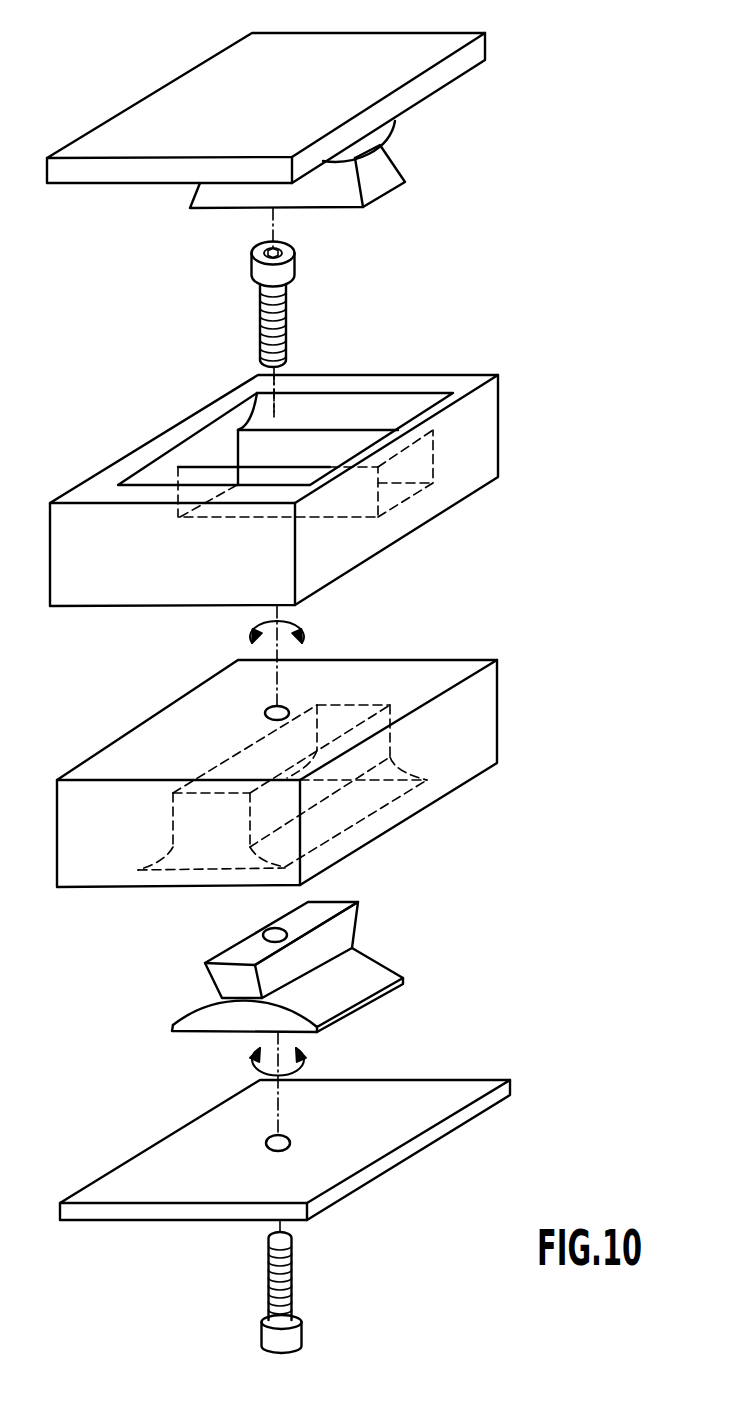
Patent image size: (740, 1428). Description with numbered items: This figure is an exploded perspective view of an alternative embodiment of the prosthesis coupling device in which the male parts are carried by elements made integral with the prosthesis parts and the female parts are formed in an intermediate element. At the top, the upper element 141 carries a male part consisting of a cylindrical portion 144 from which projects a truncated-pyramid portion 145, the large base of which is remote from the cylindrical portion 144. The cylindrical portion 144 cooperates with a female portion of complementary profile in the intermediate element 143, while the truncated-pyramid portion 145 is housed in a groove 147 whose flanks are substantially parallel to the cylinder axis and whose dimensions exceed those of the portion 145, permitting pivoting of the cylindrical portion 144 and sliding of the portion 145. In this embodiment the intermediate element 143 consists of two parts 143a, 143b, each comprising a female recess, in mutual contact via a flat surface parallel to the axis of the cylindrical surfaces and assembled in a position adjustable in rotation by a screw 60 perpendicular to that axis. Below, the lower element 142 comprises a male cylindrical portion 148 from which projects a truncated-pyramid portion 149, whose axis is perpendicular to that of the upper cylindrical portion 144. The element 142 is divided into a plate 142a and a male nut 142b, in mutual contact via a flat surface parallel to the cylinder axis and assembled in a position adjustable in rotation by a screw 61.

The element 141 is at (430, 24).
The cylindrical portion 144 is at (400, 133).
The truncated-pyramid portion 145 is at (328, 188).
The screw 60 is at (292, 327).
The groove 147 is at (220, 460).
The part of intermediate element 143b is at (276, 490).
The intermediate element 143 is at (332, 612).
The part of intermediate element 143a is at (287, 773).
The truncated-pyramid portion 149 is at (332, 937).
The male cylindrical portion 148 is at (367, 972).
The male nut 142b is at (321, 968).
The element 142 is at (348, 1065).
The plate 142a is at (344, 1204).
The screw 61 is at (309, 1332).